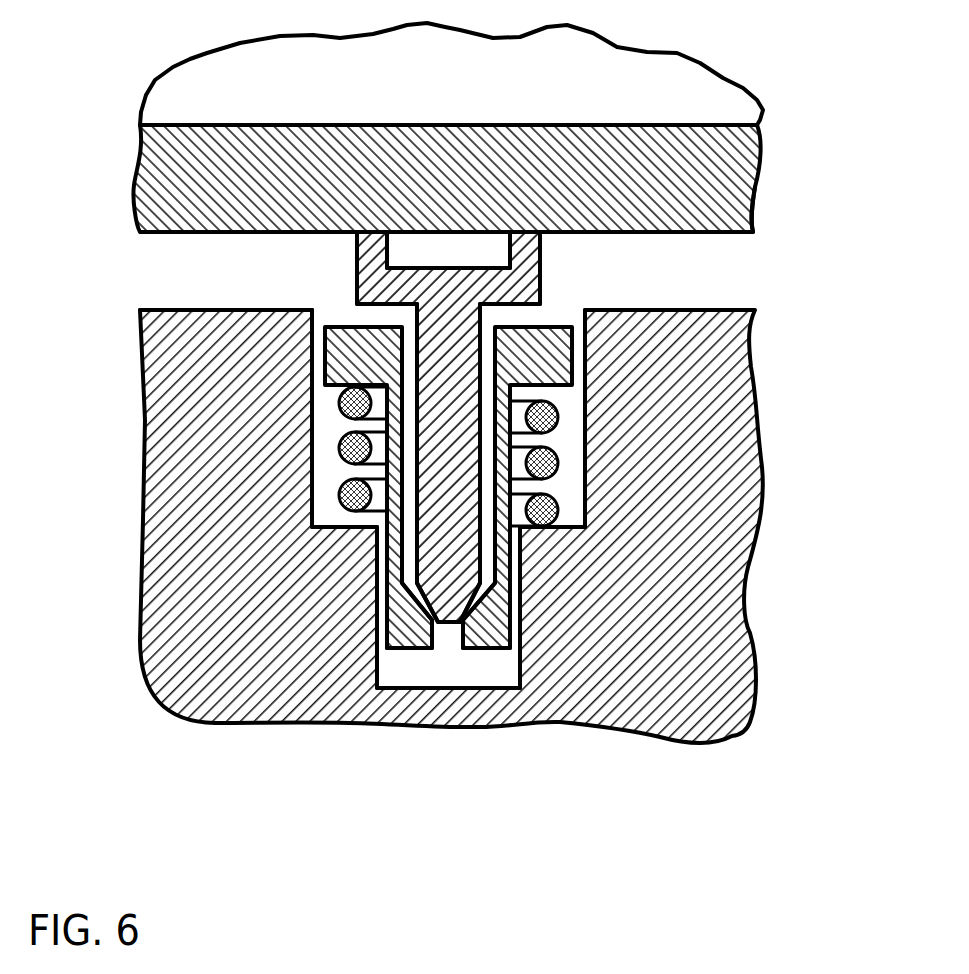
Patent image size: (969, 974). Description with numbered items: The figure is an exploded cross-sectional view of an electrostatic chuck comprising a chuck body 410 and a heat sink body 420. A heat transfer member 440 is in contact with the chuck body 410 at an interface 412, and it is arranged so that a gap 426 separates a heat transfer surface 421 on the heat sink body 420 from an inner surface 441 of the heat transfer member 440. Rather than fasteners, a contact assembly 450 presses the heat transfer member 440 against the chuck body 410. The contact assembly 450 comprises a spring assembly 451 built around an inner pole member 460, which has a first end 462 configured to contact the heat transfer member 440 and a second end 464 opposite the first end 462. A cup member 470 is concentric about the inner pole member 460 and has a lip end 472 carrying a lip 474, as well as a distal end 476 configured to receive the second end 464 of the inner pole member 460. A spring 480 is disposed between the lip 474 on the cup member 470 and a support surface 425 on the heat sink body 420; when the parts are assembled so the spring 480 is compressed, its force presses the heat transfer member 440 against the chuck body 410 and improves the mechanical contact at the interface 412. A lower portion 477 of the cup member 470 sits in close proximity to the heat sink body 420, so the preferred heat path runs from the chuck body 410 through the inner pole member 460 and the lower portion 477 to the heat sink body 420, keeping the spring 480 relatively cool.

The chuck body 410 is at (678, 98).
The interface 412 is at (245, 122).
The heat transfer member 440 is at (765, 138).
The inner surface 441 is at (758, 229).
The contact assembly 450 is at (296, 262).
The spring assembly 451 is at (326, 297).
The gap 426 is at (768, 270).
The heat transfer surface 421 is at (138, 306).
The heat sink body 420 is at (735, 372).
The support surface 425 is at (571, 531).
The inner pole member 460 is at (487, 318).
The first end 462 is at (543, 240).
The second end 464 is at (445, 572).
The lip end 472 is at (565, 347).
The distal end 476 is at (487, 630).
The lower portion 477 is at (360, 627).
The cup member 470 is at (512, 488).
The lip 474 is at (557, 392).
The spring 480 is at (352, 512).